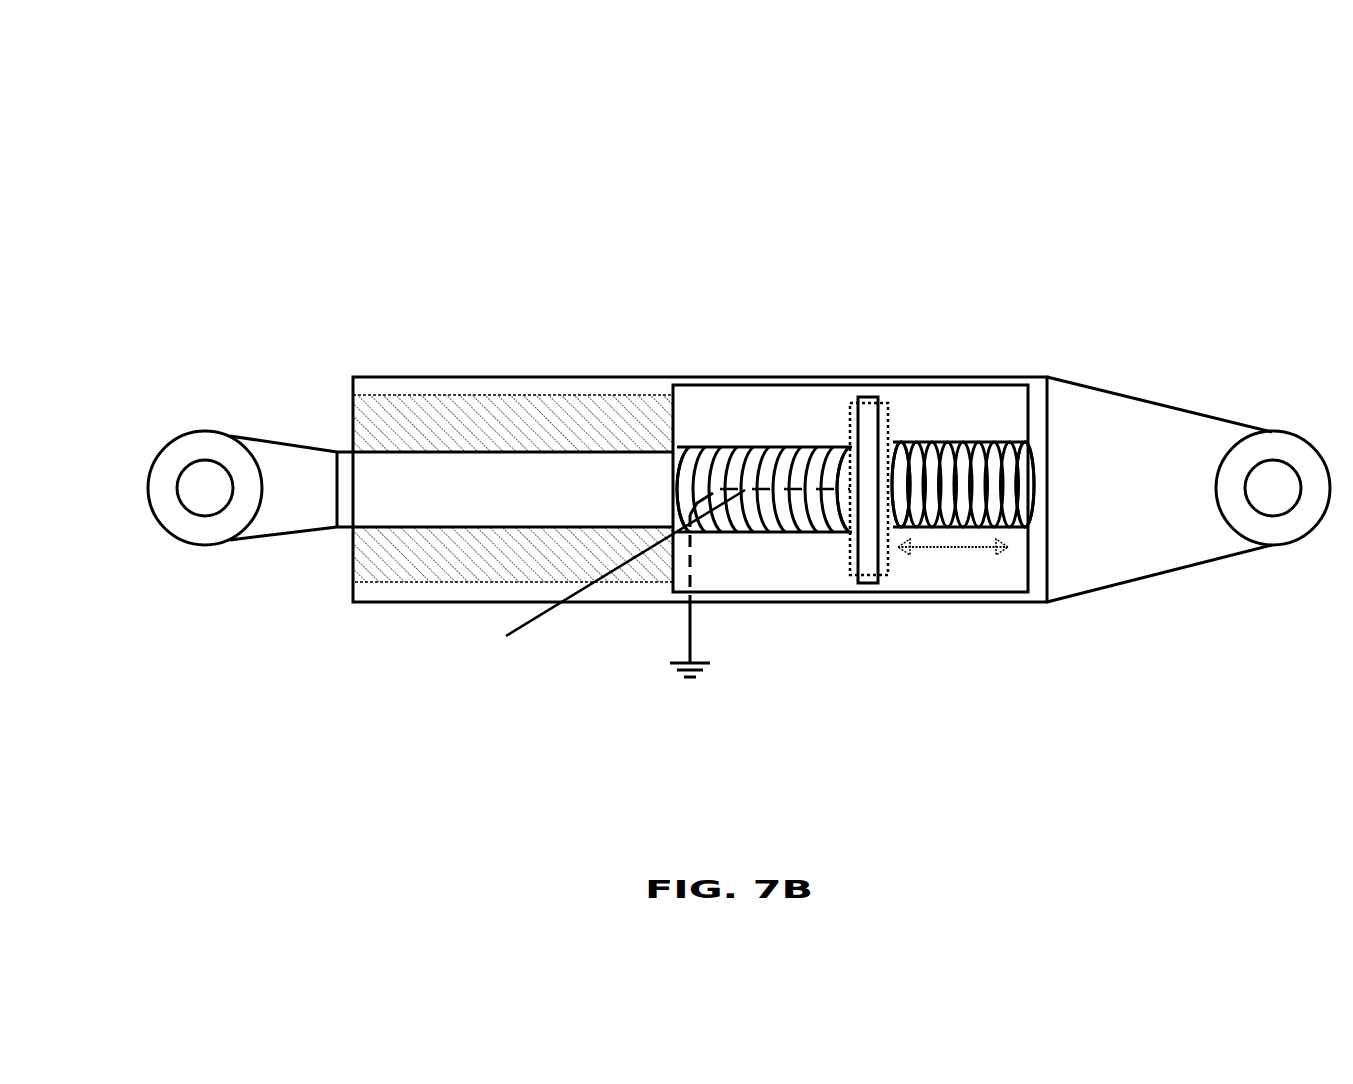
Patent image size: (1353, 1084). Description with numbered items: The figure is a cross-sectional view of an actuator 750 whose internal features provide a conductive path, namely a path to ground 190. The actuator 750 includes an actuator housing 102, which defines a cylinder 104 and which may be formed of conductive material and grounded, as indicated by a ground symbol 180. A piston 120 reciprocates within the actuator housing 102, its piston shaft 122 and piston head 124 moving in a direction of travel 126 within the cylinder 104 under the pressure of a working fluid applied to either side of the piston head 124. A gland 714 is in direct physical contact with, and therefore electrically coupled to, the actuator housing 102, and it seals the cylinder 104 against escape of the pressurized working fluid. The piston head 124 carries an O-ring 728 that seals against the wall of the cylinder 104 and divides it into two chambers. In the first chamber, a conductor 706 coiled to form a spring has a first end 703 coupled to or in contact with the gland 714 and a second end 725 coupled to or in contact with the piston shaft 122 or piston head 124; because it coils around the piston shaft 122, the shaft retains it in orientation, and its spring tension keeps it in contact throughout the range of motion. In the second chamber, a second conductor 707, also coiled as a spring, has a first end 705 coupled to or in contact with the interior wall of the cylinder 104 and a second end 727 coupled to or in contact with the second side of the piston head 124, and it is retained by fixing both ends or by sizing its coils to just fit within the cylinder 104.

The actuator 750 is at (1142, 132).
The actuator housing 102 is at (383, 602).
The cylinder 104 is at (968, 602).
The piston 120 is at (243, 415).
The piston shaft 122 is at (337, 527).
The piston head 124 is at (889, 397).
The direction of travel 126 is at (937, 550).
The ground symbol 180 is at (688, 642).
The path to ground 190 is at (506, 636).
The first end 703 is at (677, 447).
The first end 705 is at (1028, 442).
The conductor 706 is at (767, 447).
The second conductor 707 is at (972, 442).
The gland 714 is at (455, 425).
The second end 725 is at (852, 530).
The second end 727 is at (895, 530).
The O-ring 728 is at (869, 400).